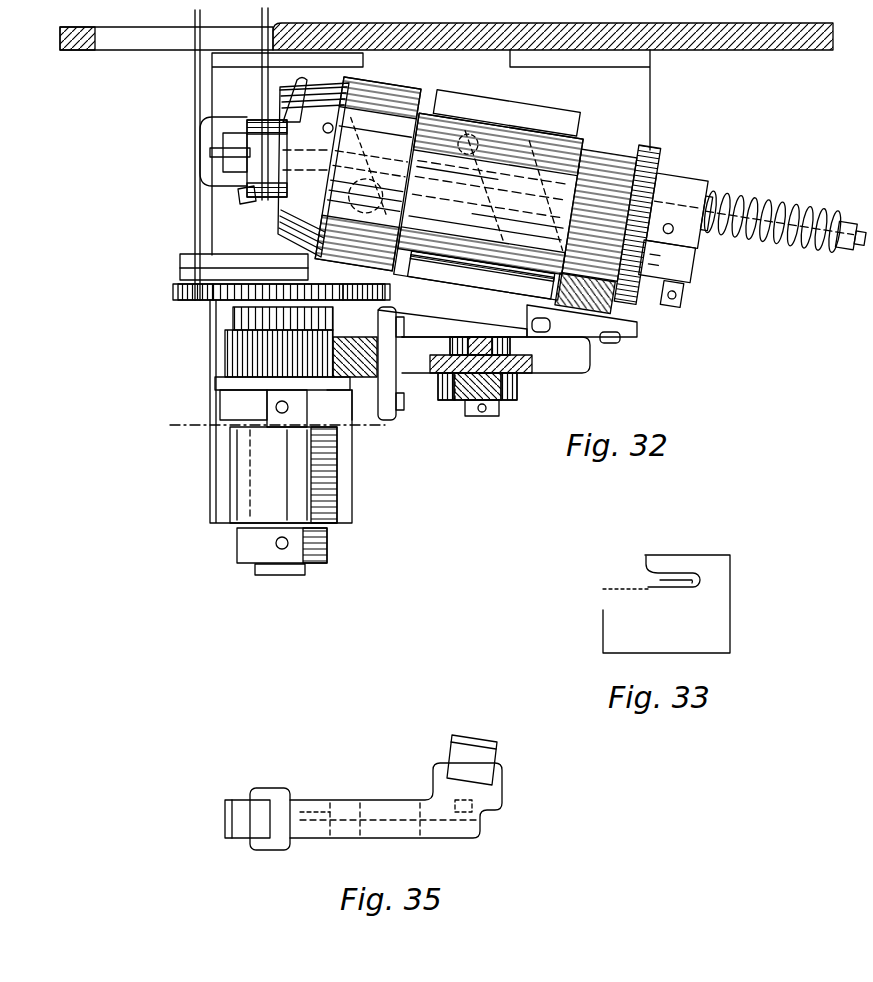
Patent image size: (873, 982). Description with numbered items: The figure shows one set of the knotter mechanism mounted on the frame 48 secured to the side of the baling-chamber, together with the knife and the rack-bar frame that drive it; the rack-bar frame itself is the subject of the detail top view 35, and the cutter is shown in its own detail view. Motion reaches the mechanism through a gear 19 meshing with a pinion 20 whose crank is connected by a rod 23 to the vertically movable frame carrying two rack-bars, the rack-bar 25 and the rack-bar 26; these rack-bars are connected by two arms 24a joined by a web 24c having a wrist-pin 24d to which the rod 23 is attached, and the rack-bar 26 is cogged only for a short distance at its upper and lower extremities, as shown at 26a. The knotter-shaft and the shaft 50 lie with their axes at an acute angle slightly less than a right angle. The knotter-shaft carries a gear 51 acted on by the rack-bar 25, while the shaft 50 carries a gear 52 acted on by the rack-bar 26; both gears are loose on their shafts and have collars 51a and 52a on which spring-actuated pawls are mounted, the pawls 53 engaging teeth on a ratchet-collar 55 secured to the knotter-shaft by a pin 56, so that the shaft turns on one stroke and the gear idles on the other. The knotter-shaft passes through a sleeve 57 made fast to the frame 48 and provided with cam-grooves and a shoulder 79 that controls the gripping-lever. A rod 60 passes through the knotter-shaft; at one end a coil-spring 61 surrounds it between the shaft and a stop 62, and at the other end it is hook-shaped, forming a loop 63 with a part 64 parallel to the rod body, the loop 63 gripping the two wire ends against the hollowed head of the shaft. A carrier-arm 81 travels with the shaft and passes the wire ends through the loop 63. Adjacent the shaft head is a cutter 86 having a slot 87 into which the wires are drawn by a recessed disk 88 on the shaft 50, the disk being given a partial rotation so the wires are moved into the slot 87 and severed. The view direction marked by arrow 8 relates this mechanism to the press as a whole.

In FIG. 32, the arrow 8 is at (172, 215).
In FIG. 32, the gear 19 is at (220, 382).
In FIG. 32, the pinion 20 is at (277, 494).
In FIG. 32, the rod 23 is at (462, 402).
In FIG. 32, the arms 24a is at (563, 368).
In FIG. 35, the arms 24a is at (325, 800).
In FIG. 32, the web 24c is at (426, 378).
In FIG. 35, the web 24c is at (352, 822).
In FIG. 32, the wrist-pin 24d is at (491, 417).
In FIG. 32, the rack-bar 25 is at (593, 304).
In FIG. 35, the rack-bar 25 is at (488, 754).
In FIG. 32, the rack-bar 26 is at (362, 340).
In FIG. 35, the cogged portions 26a is at (225, 838).
In FIG. 32, the fin 35 is at (262, 87).
In FIG. 32, the frame 48 is at (210, 153).
In FIG. 32, the shaft 50 is at (294, 574).
In FIG. 32, the gear 51 is at (609, 165).
In FIG. 32, the collar 51a is at (657, 165).
In FIG. 32, the gear 52 is at (225, 350).
In FIG. 32, the collar 52a is at (215, 385).
In FIG. 32, the spring-actuated pawls 53 is at (657, 310).
In FIG. 32, the ratchet-collar 55 is at (690, 187).
In FIG. 32, the pin 56 is at (674, 234).
In FIG. 32, the sleeve 57 is at (420, 92).
In FIG. 32, the rod 60 is at (248, 104).
In FIG. 32, the coil-spring 61 is at (741, 195).
In FIG. 32, the stop 62 is at (842, 213).
In FIG. 32, the loop 63 is at (200, 128).
In FIG. 32, the part 64 is at (234, 204).
In FIG. 32, the shoulder 79 is at (350, 93).
In FIG. 32, the carrier-arm 81 is at (252, 126).
In FIG. 32, the cutter 86 is at (183, 268).
In FIG. 33, the cutter 86 is at (651, 562).
In FIG. 32, the slot 87 is at (233, 319).
In FIG. 33, the slot 87 is at (660, 578).
In FIG. 32, the disk 88 is at (173, 296).